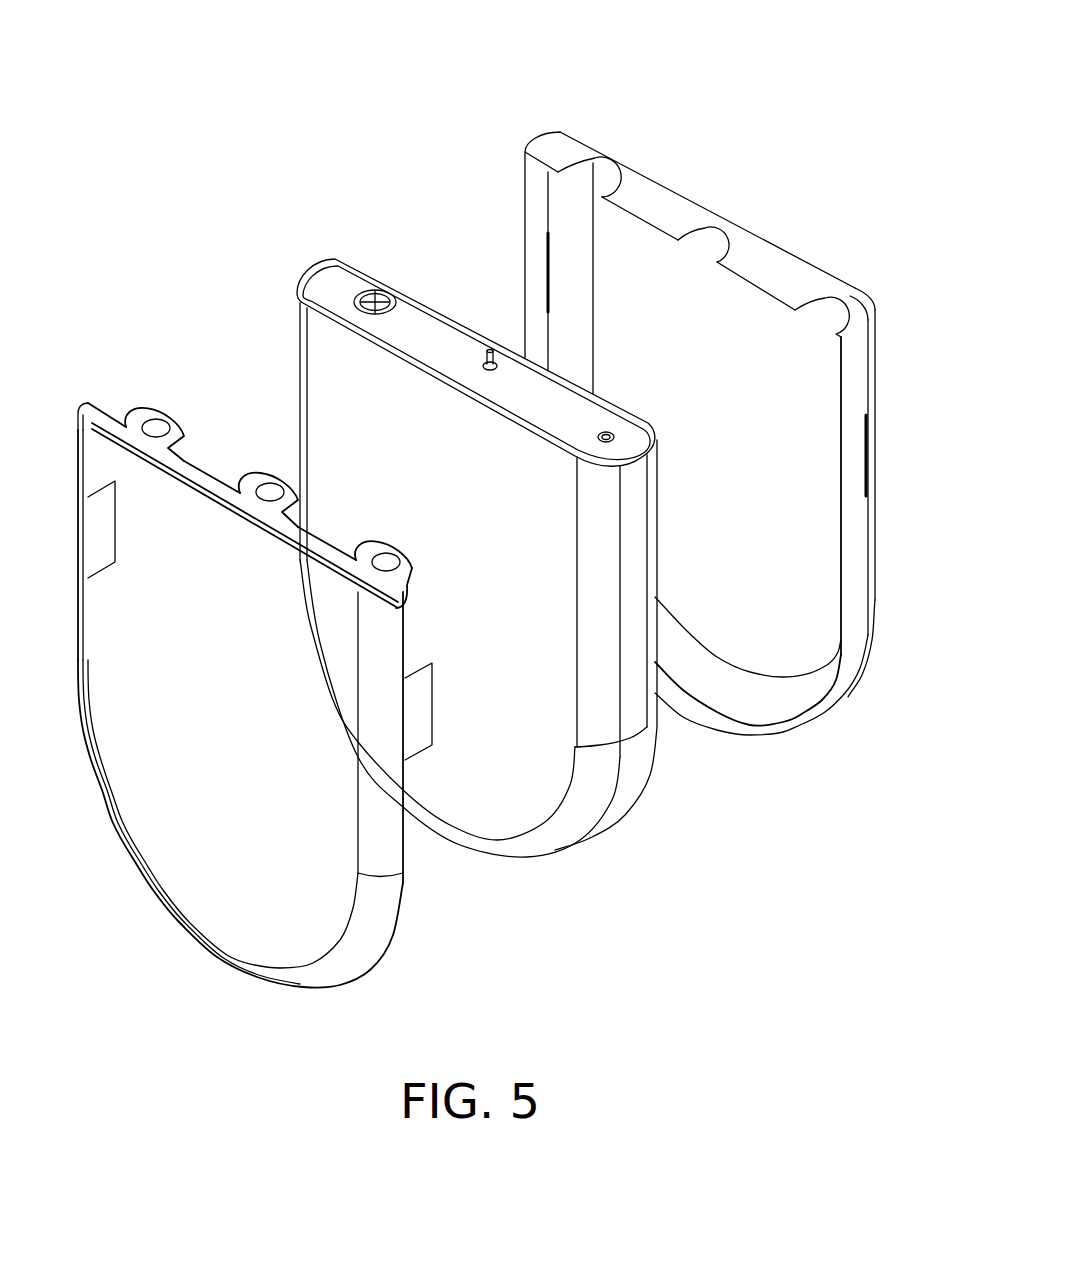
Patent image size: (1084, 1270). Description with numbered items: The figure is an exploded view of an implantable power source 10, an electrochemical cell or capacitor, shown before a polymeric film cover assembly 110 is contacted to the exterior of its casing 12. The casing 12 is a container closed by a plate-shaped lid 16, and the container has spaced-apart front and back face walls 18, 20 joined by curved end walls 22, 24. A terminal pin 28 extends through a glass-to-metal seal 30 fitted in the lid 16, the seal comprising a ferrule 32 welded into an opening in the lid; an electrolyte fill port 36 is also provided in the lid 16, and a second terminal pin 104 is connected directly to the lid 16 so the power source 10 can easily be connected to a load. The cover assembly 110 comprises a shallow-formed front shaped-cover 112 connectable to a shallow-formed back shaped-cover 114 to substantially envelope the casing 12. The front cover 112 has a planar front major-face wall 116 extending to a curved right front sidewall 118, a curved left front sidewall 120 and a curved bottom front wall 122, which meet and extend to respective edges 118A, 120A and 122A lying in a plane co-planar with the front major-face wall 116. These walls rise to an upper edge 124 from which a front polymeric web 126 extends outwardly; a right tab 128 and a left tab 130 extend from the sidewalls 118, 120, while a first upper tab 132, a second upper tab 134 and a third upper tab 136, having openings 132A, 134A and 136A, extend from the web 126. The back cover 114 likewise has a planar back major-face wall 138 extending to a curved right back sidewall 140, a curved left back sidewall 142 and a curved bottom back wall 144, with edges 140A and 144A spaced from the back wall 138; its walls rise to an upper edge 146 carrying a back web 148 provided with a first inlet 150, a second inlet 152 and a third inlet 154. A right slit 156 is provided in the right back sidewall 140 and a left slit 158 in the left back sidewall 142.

The implantable power source 10 is at (370, 228).
The casing 12 is at (603, 870).
The lid 16 is at (533, 406).
The front face wall 18 is at (336, 348).
The back face wall 20 is at (659, 527).
The curved end wall 22 is at (606, 600).
The curved end wall 24 is at (298, 325).
The terminal pin 28 is at (355, 295).
The glass-to-metal seal 30 is at (395, 287).
The ferrule 32 is at (392, 313).
The fill port 36 is at (611, 431).
The second terminal pin 104 is at (484, 368).
The polymeric film cover assembly 110 is at (692, 92).
The front shaped-cover 112 is at (80, 773).
The back shaped-cover 114 is at (690, 178).
The front major-face wall 116 is at (232, 836).
The curved right front sidewall 118 is at (402, 846).
The edge 118A is at (408, 776).
The curved left front sidewall 120 is at (82, 626).
The edge 120A is at (92, 645).
The curved bottom front wall 122 is at (238, 968).
The edge 122A is at (238, 948).
The upper edge 124 is at (248, 521).
The front polymeric web 126 is at (100, 412).
The right tab 128 is at (422, 700).
The left tab 130 is at (110, 522).
The first upper tab 132 is at (411, 556).
The opening 132A is at (388, 553).
The second upper tab 134 is at (293, 490).
The opening 134A is at (271, 483).
The third upper tab 136 is at (176, 418).
The opening 136A is at (156, 419).
The back major-face wall 138 is at (816, 590).
The curved right back sidewall 140 is at (866, 526).
The edge 140A is at (843, 558).
The curved left back sidewall 142 is at (576, 323).
The curved bottom back wall 144 is at (721, 671).
The edge 144A is at (703, 732).
The upper edge 146 is at (817, 268).
The back web 148 is at (778, 262).
The first inlet 150 is at (855, 290).
The second inlet 152 is at (720, 235).
The third inlet 154 is at (615, 160).
The right slit 156 is at (868, 471).
The left slit 158 is at (556, 282).